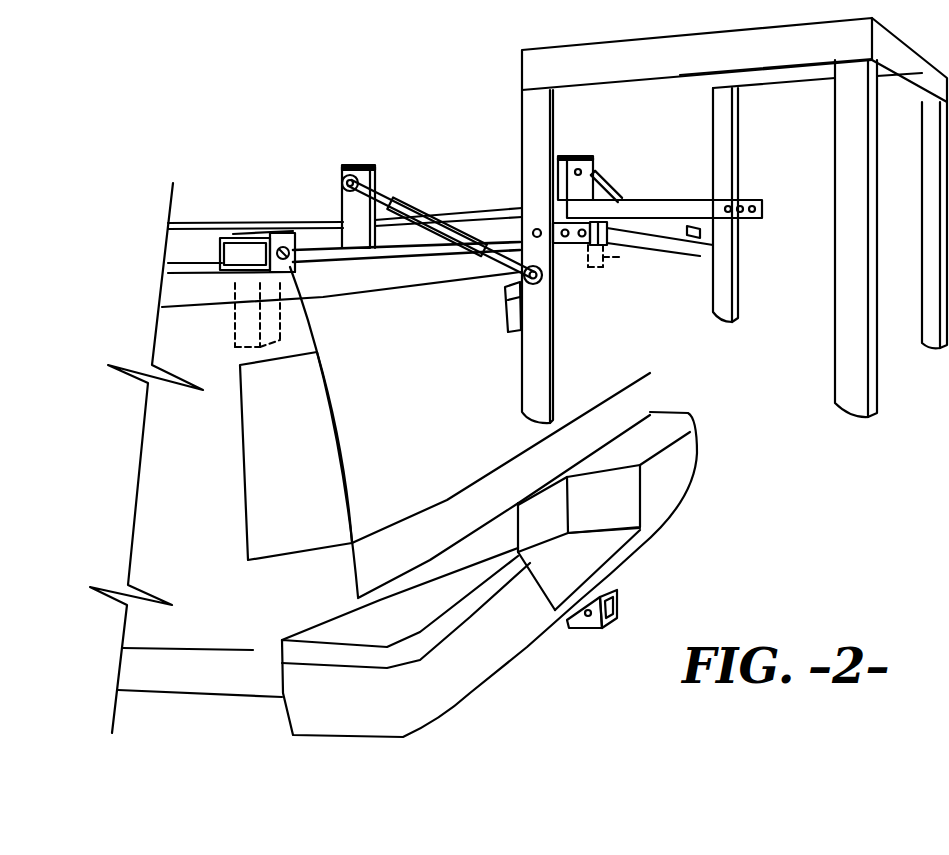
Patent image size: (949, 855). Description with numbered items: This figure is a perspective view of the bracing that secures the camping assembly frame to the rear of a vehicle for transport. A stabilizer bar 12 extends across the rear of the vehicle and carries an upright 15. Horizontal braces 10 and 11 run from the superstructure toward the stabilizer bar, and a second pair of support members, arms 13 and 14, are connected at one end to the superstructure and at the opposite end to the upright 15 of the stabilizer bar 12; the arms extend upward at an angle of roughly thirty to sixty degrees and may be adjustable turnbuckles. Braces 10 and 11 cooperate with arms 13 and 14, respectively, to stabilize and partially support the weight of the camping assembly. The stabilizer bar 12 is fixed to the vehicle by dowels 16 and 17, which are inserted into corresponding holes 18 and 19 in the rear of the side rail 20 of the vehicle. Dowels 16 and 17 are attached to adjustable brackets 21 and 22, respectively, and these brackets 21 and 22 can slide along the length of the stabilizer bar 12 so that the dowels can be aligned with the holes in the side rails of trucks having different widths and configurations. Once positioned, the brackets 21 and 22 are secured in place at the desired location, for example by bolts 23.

The brace 10 is at (490, 240).
The brace 11 is at (660, 205).
The stabilizer bar 12 is at (327, 230).
The arm 13 is at (413, 207).
The arm 14 is at (622, 188).
The upright 15 is at (382, 178).
The dowel 16 is at (235, 345).
The dowel 17 is at (605, 258).
The hole 18 is at (235, 300).
The hole 19 is at (622, 236).
The side rail 20 is at (215, 225).
The adjustable bracket 21 is at (282, 232).
The adjustable bracket 22 is at (597, 182).
The bolt 23 is at (305, 232).